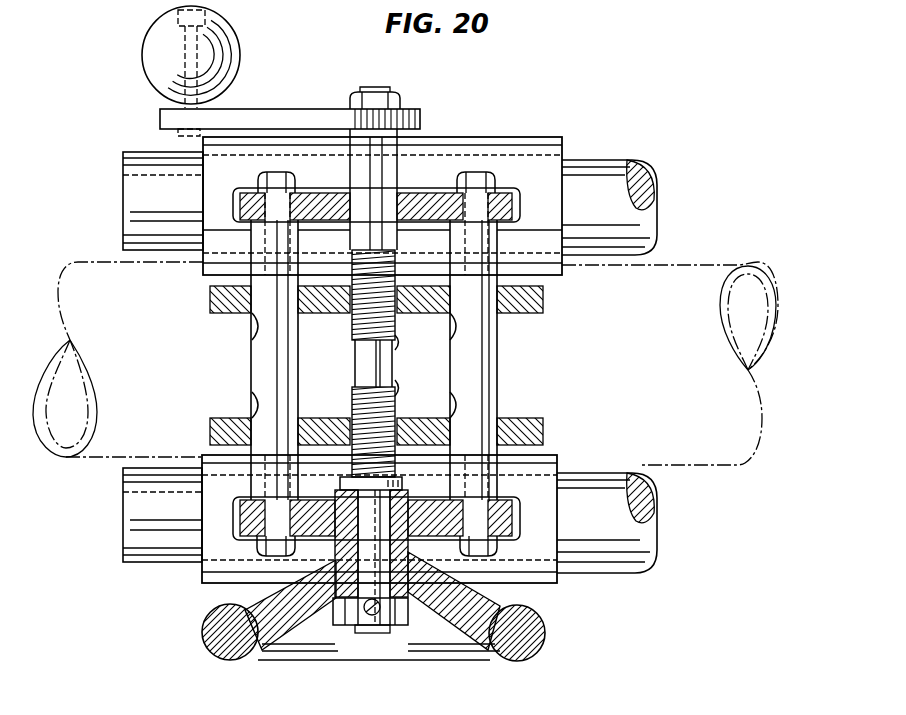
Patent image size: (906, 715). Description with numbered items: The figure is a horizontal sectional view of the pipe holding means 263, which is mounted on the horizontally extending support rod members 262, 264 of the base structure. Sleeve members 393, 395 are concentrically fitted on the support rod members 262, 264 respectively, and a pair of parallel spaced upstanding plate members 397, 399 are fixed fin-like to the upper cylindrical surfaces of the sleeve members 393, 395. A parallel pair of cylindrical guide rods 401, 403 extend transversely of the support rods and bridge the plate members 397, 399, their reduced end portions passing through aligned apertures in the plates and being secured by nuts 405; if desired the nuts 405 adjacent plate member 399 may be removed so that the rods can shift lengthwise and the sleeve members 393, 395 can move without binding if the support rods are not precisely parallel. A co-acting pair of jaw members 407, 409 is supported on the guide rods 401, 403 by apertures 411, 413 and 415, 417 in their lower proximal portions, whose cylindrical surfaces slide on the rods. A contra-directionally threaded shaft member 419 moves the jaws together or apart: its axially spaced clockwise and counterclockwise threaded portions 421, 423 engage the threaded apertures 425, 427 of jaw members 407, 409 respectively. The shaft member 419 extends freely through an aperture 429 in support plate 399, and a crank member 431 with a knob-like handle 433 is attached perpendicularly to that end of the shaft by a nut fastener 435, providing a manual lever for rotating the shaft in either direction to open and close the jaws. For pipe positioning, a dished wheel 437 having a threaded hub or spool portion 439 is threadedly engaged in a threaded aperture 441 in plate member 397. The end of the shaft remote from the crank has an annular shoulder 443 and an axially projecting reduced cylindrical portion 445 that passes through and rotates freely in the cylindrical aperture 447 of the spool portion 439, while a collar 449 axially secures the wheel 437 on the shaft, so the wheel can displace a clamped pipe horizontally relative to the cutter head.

The pipe holding means 263 is at (668, 93).
The knob-like handle 433 is at (236, 52).
The crank member 431 is at (268, 108).
The nut fastener 435 is at (392, 96).
The sleeve member 395 is at (530, 170).
The support rod member 264 is at (123, 160).
The nuts 405 is at (262, 184).
The plate member 399 is at (252, 205).
The aperture 429 is at (399, 196).
The guide rod 401 is at (258, 368).
The guide rod 403 is at (498, 364).
The jaw member 409 is at (232, 300).
The jaw member 407 is at (232, 424).
The aperture 415 is at (255, 318).
The aperture 411 is at (255, 418).
The aperture 417 is at (453, 312).
The aperture 413 is at (452, 428).
The contra-directionally threaded shaft member 419 is at (358, 366).
The threaded portion 423 is at (354, 322).
The threaded portion 421 is at (366, 436).
The threaded aperture 427 is at (397, 344).
The threaded aperture 425 is at (398, 392).
The sleeve member 393 is at (545, 558).
The support rod member 262 is at (125, 568).
The plate member 397 is at (252, 524).
The threaded aperture 441 is at (347, 487).
The annular shoulder 443 is at (401, 486).
The threaded hub or spool portion 439 is at (290, 587).
The axially projecting reduced cylindrical portion 445 is at (412, 562).
The dished wheel 437 is at (246, 654).
The cylindrical aperture 447 is at (348, 602).
The collar 449 is at (409, 628).